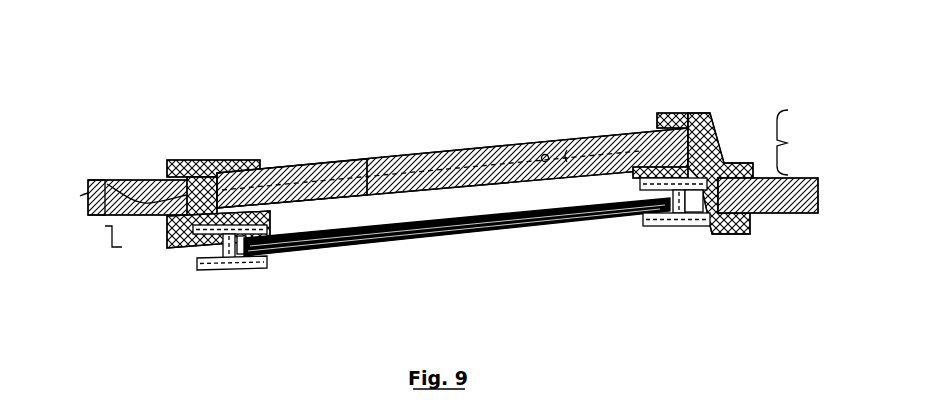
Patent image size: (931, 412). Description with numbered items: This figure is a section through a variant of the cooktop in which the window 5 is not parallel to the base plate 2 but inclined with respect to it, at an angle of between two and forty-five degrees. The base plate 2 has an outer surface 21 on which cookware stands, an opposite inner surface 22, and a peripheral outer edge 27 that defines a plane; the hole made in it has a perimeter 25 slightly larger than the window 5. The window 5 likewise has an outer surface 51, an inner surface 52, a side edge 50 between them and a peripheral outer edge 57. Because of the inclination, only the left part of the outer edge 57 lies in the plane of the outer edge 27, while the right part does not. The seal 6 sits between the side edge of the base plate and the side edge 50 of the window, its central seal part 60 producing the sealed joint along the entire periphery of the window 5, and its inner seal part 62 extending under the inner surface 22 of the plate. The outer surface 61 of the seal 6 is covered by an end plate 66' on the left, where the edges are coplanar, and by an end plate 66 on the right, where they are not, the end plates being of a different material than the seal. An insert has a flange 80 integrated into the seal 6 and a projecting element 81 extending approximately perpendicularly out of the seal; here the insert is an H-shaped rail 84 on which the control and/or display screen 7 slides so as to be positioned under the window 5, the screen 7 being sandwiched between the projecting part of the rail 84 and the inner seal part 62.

The base plate 2 is at (137, 186).
The outer surface 21 is at (93, 178).
The inner surface 22 is at (127, 180).
The perimeter 25 is at (80, 196).
The inner seal part 62 is at (96, 238).
The central seal part 60 is at (162, 218).
The seal 6 is at (203, 139).
The end plate 66' is at (222, 124).
The window 5 is at (588, 133).
The side edge 50 is at (270, 173).
The outer surface 51 is at (336, 163).
The inner surface 52 is at (397, 160).
The outer edge 57 is at (686, 113).
The end plate 66 is at (721, 135).
The outer edge 27 is at (720, 175).
The outer surface 61 is at (799, 142).
The flange 80 is at (272, 213).
The projecting element 81 is at (180, 270).
The H-shaped rail 84 is at (233, 270).
The control and/or display screen 7 is at (425, 238).